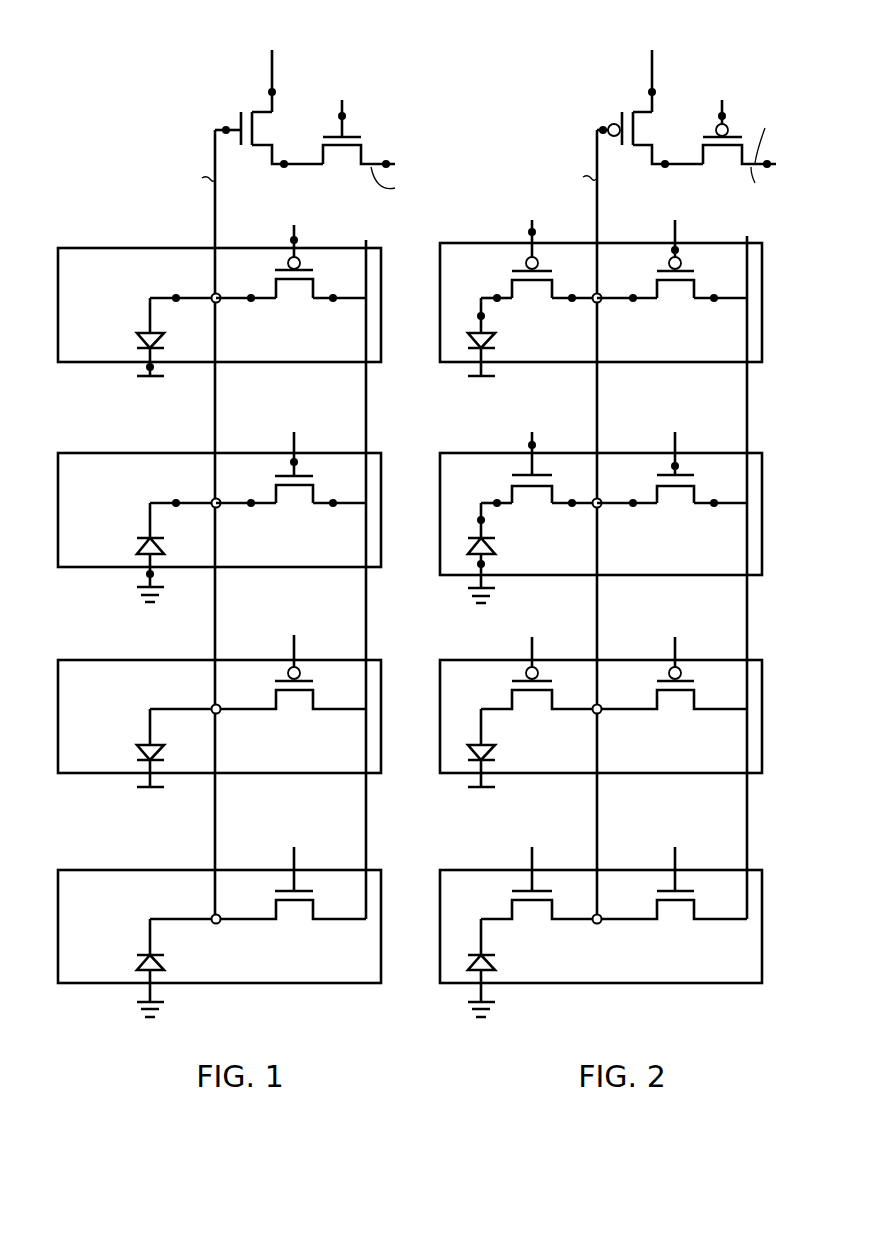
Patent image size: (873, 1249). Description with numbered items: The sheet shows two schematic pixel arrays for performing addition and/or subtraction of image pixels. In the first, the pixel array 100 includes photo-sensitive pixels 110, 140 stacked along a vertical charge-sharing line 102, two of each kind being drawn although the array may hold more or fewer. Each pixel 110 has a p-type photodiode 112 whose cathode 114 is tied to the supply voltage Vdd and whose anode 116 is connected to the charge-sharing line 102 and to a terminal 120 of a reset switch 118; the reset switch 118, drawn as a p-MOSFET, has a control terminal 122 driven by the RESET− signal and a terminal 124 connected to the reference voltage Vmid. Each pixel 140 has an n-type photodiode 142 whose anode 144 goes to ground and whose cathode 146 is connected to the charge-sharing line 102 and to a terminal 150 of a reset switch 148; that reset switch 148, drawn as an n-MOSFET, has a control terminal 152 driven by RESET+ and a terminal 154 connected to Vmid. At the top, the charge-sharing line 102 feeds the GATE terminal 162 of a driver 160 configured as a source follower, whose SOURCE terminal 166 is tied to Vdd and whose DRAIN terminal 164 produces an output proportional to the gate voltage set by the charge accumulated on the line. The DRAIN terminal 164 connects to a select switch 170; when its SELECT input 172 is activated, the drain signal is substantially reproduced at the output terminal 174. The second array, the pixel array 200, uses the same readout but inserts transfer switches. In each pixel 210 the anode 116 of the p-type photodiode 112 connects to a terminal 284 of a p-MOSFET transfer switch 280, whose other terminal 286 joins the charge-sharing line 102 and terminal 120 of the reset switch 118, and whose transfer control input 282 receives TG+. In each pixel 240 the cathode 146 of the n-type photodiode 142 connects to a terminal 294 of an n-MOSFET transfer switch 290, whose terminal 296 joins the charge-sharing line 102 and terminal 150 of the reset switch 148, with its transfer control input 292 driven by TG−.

In FIG. 1, the pixel array 100 is at (317, 42).
In FIG. 1, the charge-sharing line 102 is at (215, 223).
In FIG. 2, the charge-sharing line 102 is at (598, 192).
In FIG. 1, the photo-sensitive pixel 110 is at (122, 248).
In FIG. 1, the p-type photodiode 112 is at (165, 339).
In FIG. 2, the p-type photodiode 112 is at (496, 339).
In FIG. 1, the cathode 114 is at (146, 368).
In FIG. 1, the anode 116 is at (176, 295).
In FIG. 2, the anode 116 is at (485, 316).
In FIG. 1, the reset switch 118 is at (294, 282).
In FIG. 2, the reset switch 118 is at (675, 282).
In FIG. 1, the terminal 120 is at (251, 302).
In FIG. 2, the terminal 120 is at (633, 302).
In FIG. 1, the control terminal 122 is at (294, 240).
In FIG. 2, the control terminal 122 is at (672, 251).
In FIG. 1, the terminal 124 is at (333, 302).
In FIG. 2, the terminal 124 is at (714, 302).
In FIG. 1, the photo-sensitive pixel 140 is at (122, 453).
In FIG. 1, the n-type photodiode 142 is at (165, 540).
In FIG. 2, the n-type photodiode 142 is at (496, 544).
In FIG. 1, the anode 144 is at (146, 575).
In FIG. 2, the anode 144 is at (477, 565).
In FIG. 1, the cathode 146 is at (176, 500).
In FIG. 2, the cathode 146 is at (485, 520).
In FIG. 1, the reset switch 148 is at (294, 494).
In FIG. 2, the reset switch 148 is at (675, 493).
In FIG. 1, the terminal 150 is at (251, 507).
In FIG. 2, the terminal 150 is at (632, 501).
In FIG. 1, the control terminal 152 is at (292, 459).
In FIG. 2, the control terminal 152 is at (673, 463).
In FIG. 1, the terminal 154 is at (333, 507).
In FIG. 2, the terminal 154 is at (715, 501).
In FIG. 1, the driver 160 is at (282, 138).
In FIG. 2, the driver 160 is at (662, 138).
In FIG. 1, the GATE terminal 162 is at (225, 128).
In FIG. 2, the GATE terminal 162 is at (602, 128).
In FIG. 1, the DRAIN terminal 164 is at (284, 166).
In FIG. 2, the DRAIN terminal 164 is at (664, 166).
In FIG. 1, the SOURCE terminal 166 is at (272, 92).
In FIG. 2, the SOURCE terminal 166 is at (651, 92).
In FIG. 1, the select switch 170 is at (359, 155).
In FIG. 2, the select switch 170 is at (739, 155).
In FIG. 1, the SELECT input 172 is at (343, 116).
In FIG. 2, the SELECT input 172 is at (718, 117).
In FIG. 1, the output terminal 174 is at (388, 160).
In FIG. 2, the output terminal 174 is at (770, 160).
In FIG. 2, the pixel array 200 is at (704, 42).
In FIG. 2, the pixel 210 is at (762, 307).
In FIG. 2, the pixel 240 is at (762, 512).
In FIG. 2, the transfer switch 280 is at (532, 282).
In FIG. 2, the transfer control input 282 is at (529, 232).
In FIG. 2, the terminal 284 is at (495, 295).
In FIG. 2, the terminal 286 is at (572, 302).
In FIG. 2, the transfer switch 290 is at (532, 493).
In FIG. 2, the transfer control input 292 is at (529, 445).
In FIG. 2, the terminal 294 is at (495, 500).
In FIG. 2, the terminal 296 is at (572, 507).